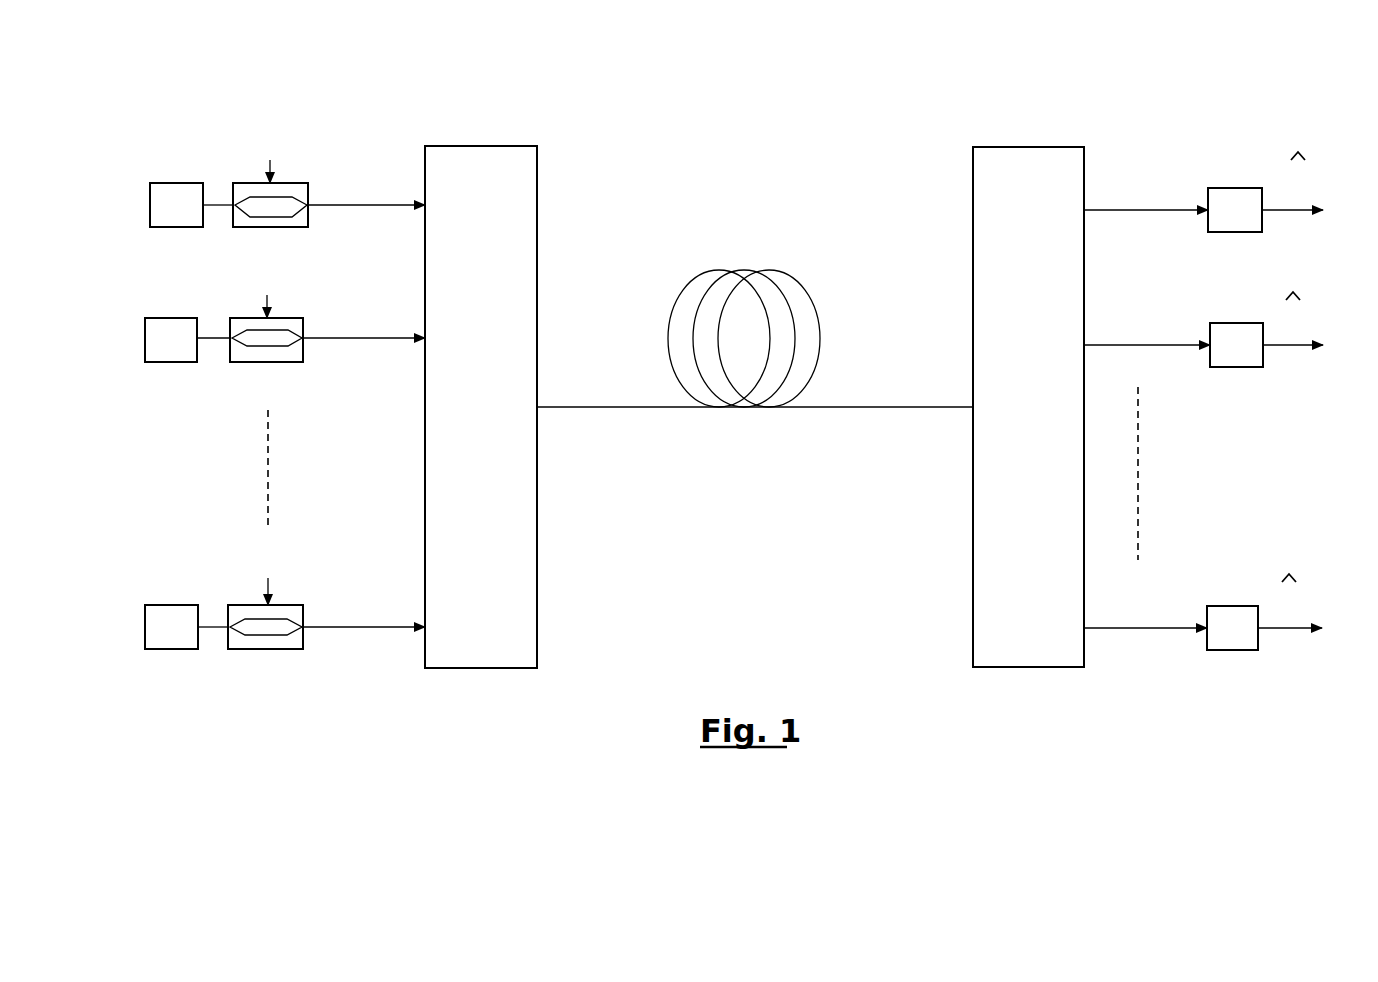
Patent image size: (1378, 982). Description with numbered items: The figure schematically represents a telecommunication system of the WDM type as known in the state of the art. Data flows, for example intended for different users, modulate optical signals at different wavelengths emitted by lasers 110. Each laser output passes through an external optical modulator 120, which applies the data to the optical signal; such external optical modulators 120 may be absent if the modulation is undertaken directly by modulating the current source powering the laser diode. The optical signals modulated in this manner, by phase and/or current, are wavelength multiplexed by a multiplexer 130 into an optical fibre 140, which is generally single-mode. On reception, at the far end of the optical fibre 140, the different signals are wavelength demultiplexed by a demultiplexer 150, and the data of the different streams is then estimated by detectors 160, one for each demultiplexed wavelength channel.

The lasers 110 is at (177, 180).
The external optical modulators 120 is at (300, 182).
The multiplexer 130 is at (537, 152).
The optical fibre 140 is at (725, 270).
The demultiplexer 150 is at (1010, 147).
The detectors 160 is at (1223, 187).